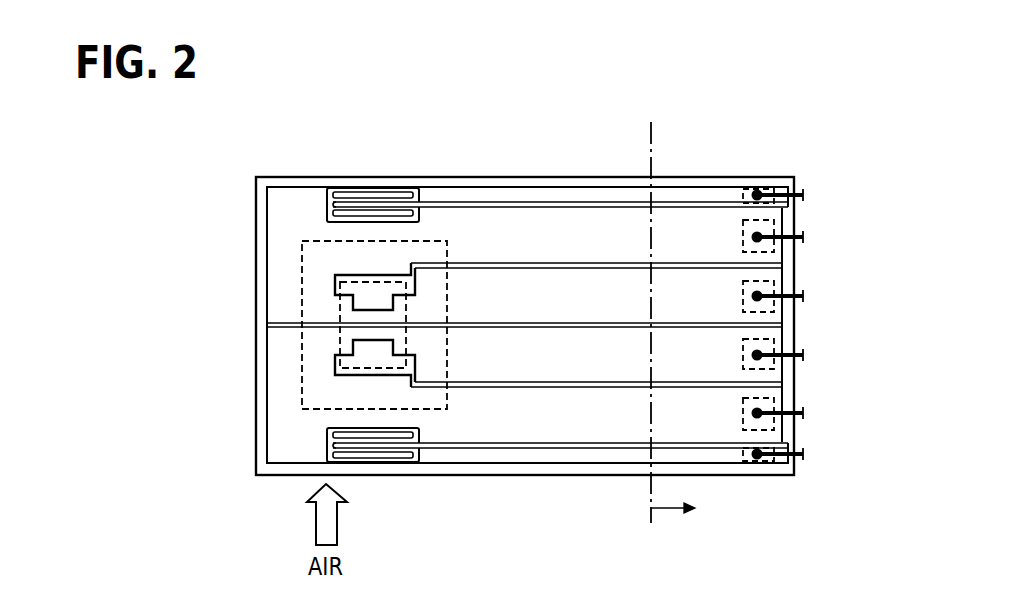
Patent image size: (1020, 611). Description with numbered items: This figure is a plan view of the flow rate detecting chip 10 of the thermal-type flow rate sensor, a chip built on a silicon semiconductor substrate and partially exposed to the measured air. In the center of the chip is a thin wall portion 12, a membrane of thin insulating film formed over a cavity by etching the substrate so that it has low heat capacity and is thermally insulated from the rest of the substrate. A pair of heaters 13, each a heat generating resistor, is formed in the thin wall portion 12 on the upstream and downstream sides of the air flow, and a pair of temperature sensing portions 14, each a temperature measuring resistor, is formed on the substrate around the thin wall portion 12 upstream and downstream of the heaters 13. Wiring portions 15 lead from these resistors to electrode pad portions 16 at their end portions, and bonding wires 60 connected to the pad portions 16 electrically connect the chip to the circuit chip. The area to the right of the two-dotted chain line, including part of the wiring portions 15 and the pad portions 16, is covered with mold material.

The flow rate detecting chip 10 is at (813, 165).
The thin wall portion 12 is at (353, 282).
The heater 13 is at (370, 317).
The temperature sensing portion 14 is at (375, 201).
The wiring portion 15 is at (563, 229).
The electrode pad portion 16 is at (748, 188).
The bonding wire 60 is at (786, 188).